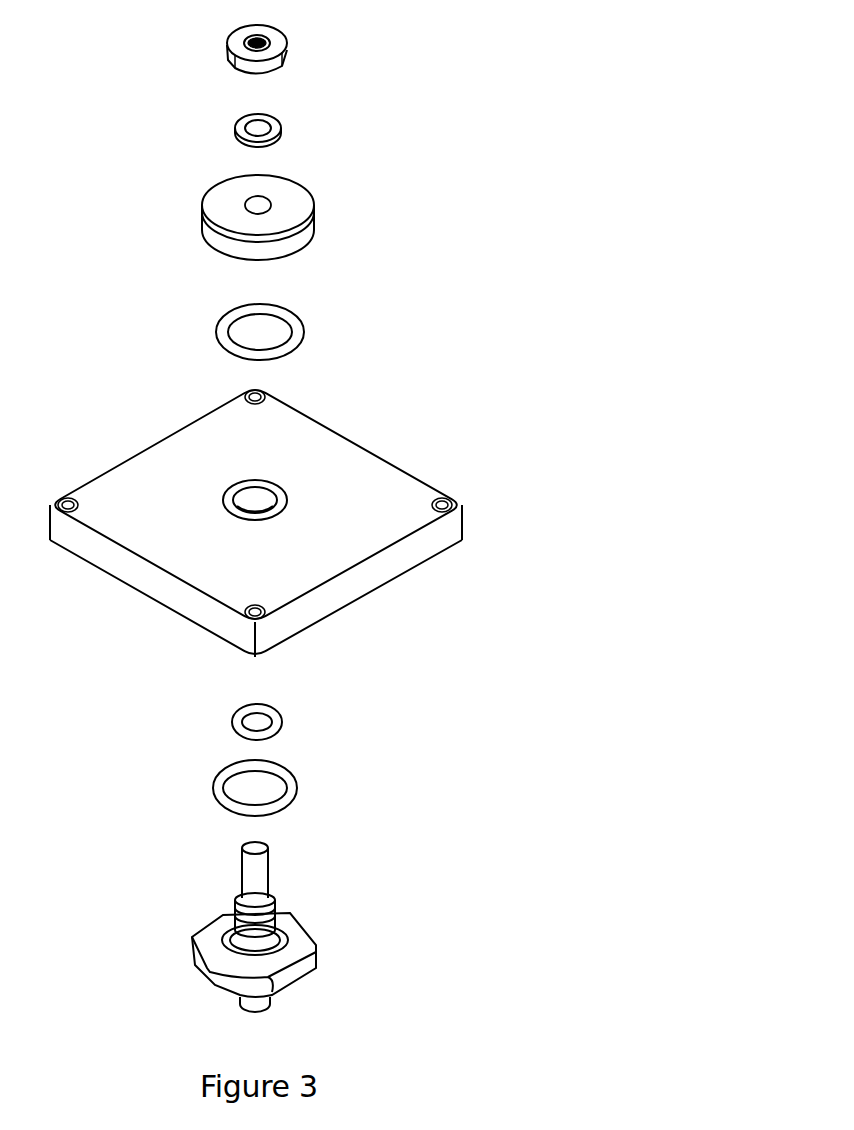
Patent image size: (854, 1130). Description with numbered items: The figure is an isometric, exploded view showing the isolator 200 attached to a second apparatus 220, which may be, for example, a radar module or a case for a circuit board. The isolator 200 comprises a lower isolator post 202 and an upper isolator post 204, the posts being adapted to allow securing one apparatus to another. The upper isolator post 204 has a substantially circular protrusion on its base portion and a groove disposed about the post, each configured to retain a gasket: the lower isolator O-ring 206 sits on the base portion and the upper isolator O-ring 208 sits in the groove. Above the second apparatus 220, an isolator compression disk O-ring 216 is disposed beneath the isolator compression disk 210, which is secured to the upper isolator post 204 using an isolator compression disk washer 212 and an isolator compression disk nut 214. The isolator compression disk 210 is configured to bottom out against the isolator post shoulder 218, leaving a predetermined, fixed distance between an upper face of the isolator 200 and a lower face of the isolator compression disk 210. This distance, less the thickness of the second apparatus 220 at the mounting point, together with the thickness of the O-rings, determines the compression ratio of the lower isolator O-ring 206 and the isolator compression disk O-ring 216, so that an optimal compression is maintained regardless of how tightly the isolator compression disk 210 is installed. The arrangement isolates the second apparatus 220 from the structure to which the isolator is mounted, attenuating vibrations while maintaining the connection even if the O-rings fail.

The isolator 200 is at (332, 965).
The lower isolator post 202 is at (231, 1012).
The upper isolator post 204 is at (282, 855).
The lower isolator O-ring 206 is at (311, 786).
The upper isolator O-ring 208 is at (298, 721).
The isolator compression disk 210 is at (331, 221).
The isolator compression disk washer 212 is at (293, 124).
The isolator compression disk nut 214 is at (296, 37).
The isolator compression disk O-ring 216 is at (318, 318).
The isolator post shoulder 218 is at (290, 895).
The second apparatus 220 is at (474, 520).